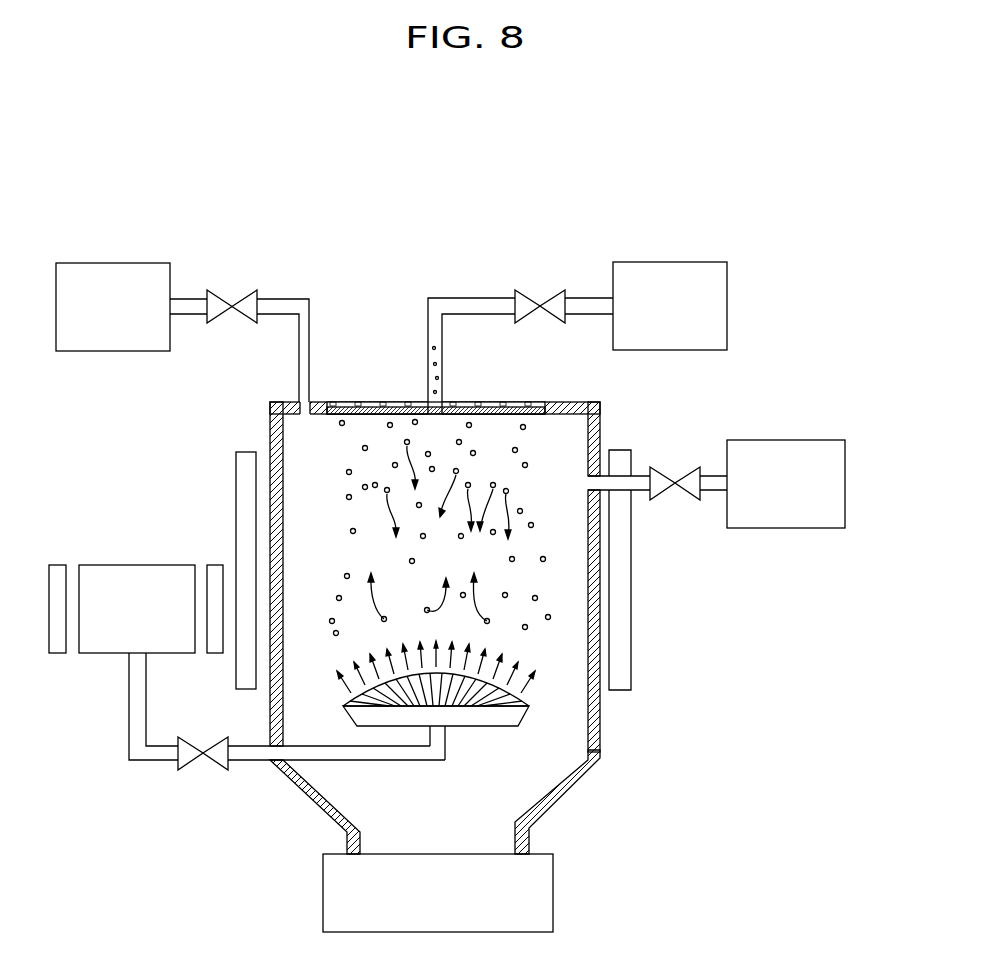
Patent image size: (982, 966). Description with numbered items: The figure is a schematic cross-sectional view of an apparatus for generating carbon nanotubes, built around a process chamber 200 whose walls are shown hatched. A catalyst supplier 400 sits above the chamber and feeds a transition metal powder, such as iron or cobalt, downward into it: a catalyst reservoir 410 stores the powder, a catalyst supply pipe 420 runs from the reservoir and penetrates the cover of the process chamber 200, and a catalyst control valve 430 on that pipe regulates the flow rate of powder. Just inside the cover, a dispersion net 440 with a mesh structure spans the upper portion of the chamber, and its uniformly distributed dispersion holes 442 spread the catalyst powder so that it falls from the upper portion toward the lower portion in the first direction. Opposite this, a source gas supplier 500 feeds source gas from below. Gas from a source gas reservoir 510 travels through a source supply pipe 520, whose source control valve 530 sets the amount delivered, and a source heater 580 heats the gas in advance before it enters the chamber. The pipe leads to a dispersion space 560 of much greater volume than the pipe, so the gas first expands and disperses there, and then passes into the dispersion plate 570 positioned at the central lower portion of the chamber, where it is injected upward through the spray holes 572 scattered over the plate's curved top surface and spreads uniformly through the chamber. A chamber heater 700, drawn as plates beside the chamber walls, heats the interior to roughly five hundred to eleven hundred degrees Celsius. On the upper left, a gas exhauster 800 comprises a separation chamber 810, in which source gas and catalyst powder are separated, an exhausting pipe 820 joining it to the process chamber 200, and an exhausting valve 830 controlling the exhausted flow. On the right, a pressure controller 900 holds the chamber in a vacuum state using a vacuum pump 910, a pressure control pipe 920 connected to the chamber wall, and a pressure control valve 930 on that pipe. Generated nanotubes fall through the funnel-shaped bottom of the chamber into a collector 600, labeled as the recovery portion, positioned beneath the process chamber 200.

The process chamber 200 is at (275, 428).
The catalyst supplier 400 is at (586, 288).
The catalyst reservoir 410 is at (666, 262).
The catalyst supply pipe 420 is at (582, 298).
The catalyst control valve 430 is at (532, 292).
The dispersion net 440 is at (440, 359).
The dispersion holes 442 is at (388, 402).
The source gas supplier 500 is at (245, 664).
The source gas reservoir 510 is at (152, 565).
The source supply pipe 520 is at (153, 762).
The source control valve 530 is at (215, 768).
The dispersion space 560 is at (484, 718).
The dispersion plate 570 is at (527, 703).
The spray holes 572 is at (497, 708).
The source heater 580 is at (62, 653).
The collector 600 is at (553, 893).
The chamber heater 700 is at (241, 488).
The gas exhauster 800 is at (182, 289).
The separation chamber 810 is at (135, 262).
The exhausting pipe 820 is at (186, 298).
The exhausting valve 830 is at (237, 292).
The pressure controller 900 is at (716, 441).
The vacuum pump 910 is at (771, 440).
The pressure control pipe 920 is at (717, 476).
The pressure control valve 930 is at (665, 476).